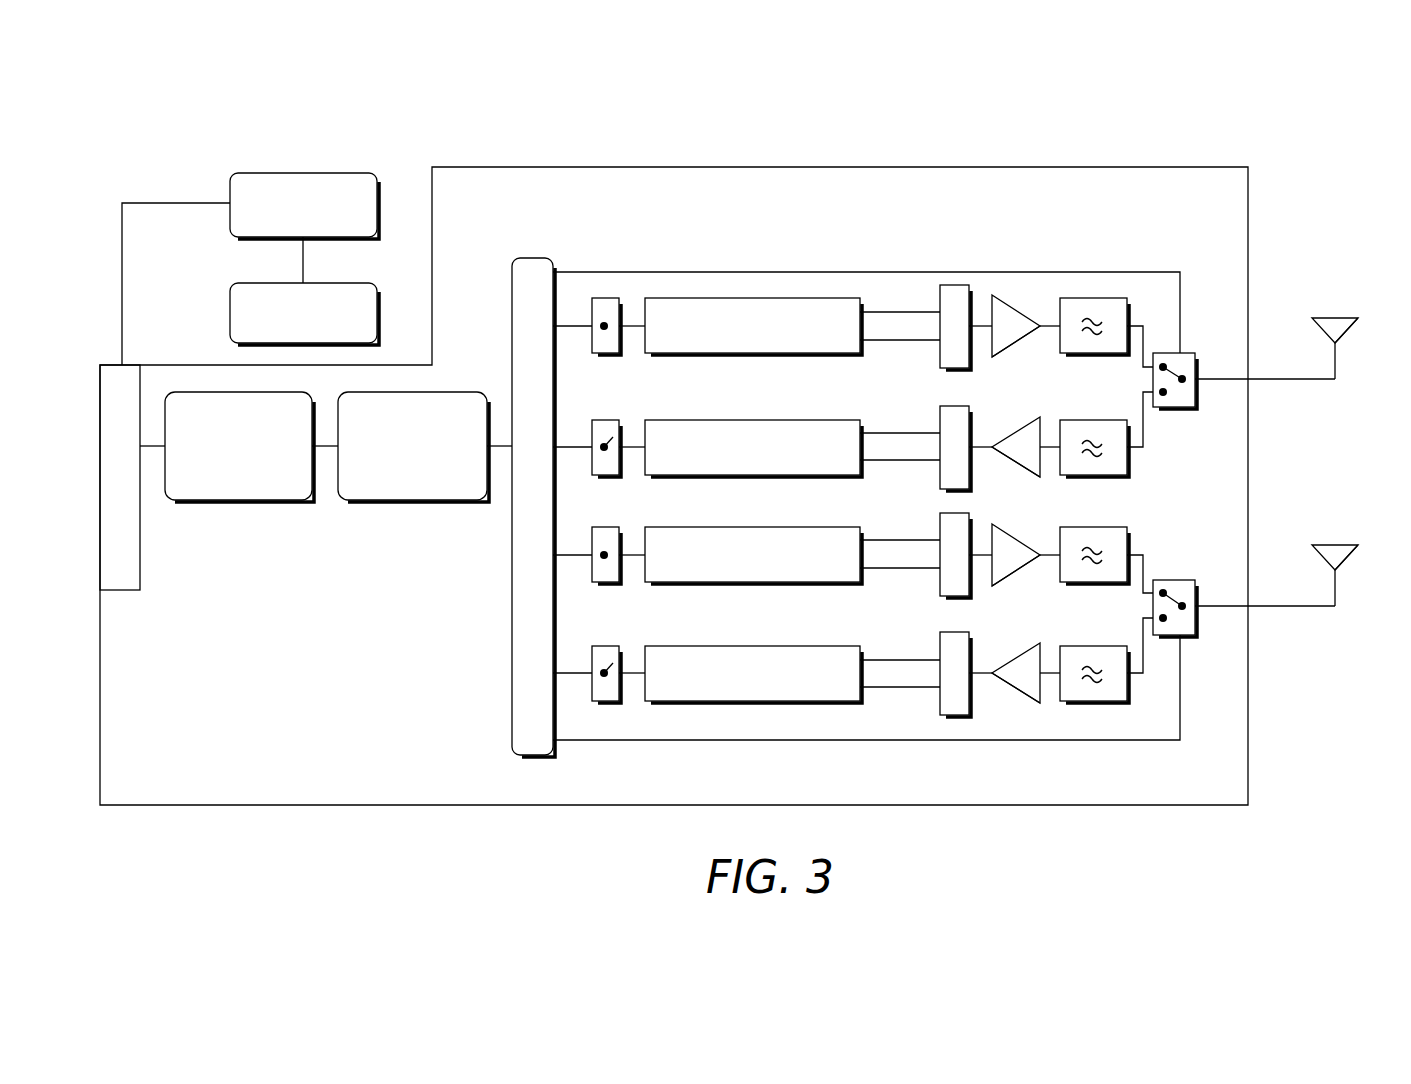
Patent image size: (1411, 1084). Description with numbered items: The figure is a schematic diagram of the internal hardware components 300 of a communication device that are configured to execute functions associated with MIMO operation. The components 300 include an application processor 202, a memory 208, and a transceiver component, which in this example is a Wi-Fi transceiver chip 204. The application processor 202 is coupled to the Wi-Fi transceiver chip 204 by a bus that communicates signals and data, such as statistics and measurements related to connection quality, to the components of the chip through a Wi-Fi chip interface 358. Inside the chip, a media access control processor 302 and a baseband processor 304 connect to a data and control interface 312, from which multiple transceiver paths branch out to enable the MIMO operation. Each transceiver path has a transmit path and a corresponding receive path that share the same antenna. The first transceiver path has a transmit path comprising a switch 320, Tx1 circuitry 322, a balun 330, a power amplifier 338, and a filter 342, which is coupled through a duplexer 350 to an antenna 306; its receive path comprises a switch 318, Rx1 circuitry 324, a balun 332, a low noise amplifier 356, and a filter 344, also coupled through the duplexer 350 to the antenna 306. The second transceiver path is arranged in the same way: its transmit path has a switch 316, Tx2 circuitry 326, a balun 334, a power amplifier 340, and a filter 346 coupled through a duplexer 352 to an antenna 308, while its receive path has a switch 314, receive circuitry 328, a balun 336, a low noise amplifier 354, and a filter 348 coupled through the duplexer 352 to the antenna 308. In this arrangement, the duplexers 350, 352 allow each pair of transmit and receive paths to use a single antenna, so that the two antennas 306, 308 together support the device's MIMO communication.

The internal hardware components 300 is at (1340, 151).
The Wi-Fi transceiver chip 204 is at (1232, 167).
The application processor 202 is at (253, 173).
The memory 208 is at (253, 283).
The Wi-Fi chip interface 358 is at (120, 590).
The media access control (MAC) processor 302 is at (239, 502).
The baseband processor 304 is at (414, 502).
The data and control interface 312 is at (528, 258).
The switch 314 is at (605, 646).
The switch 316 is at (605, 527).
The switch 318 is at (605, 420).
The switch 320 is at (610, 355).
The Tx1 circuitry 322 is at (762, 355).
The Rx1 circuitry 324 is at (848, 420).
The Tx2 circuitry 326 is at (848, 527).
The Rx1 circuitry 328 is at (848, 646).
The balun 330 is at (953, 285).
The balun 332 is at (945, 415).
The balun 334 is at (953, 598).
The balun 336 is at (940, 712).
The power amplifier 338 is at (1027, 344).
The power amplifier 340 is at (1033, 565).
The filter 342 is at (1099, 355).
The filter 344 is at (1120, 477).
The filter 346 is at (1101, 584).
The filter 348 is at (1099, 703).
The duplexer 350 is at (1176, 409).
The duplexer 352 is at (1172, 580).
The low noise amplifier 354 is at (1021, 703).
The low noise amplifier 356 is at (1021, 477).
The antenna 306 is at (1336, 361).
The antenna 308 is at (1336, 589).